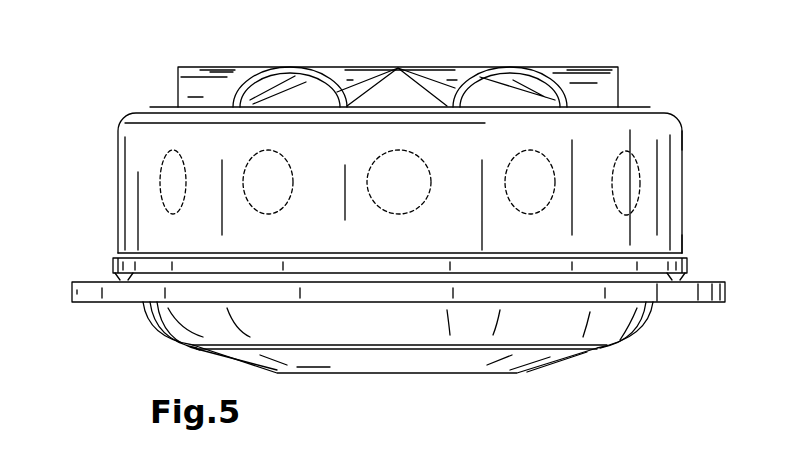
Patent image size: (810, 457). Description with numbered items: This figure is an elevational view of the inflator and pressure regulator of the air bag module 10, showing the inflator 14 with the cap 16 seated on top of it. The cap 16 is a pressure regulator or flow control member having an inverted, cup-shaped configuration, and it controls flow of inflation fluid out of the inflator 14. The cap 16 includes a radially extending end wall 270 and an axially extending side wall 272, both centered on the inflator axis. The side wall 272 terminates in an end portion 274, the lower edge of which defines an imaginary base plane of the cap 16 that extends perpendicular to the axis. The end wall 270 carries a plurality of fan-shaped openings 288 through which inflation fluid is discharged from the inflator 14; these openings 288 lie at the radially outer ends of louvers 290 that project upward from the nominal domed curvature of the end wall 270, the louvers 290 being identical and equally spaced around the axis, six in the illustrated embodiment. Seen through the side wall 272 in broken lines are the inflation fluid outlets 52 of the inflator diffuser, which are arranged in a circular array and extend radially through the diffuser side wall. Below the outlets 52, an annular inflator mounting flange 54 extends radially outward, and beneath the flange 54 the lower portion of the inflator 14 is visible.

The air bag module 10 is at (88, 154).
The cap 16 is at (90, 226).
The end wall 270 is at (206, 100).
The fan-shaped openings 288 is at (280, 80).
The louvers 290 is at (343, 72).
The side wall 272 is at (682, 143).
The inflation fluid outlets 52 is at (640, 192).
The end portion 274 is at (682, 245).
The inflator mounting flange 54 is at (90, 290).
The inflator 14 is at (644, 342).